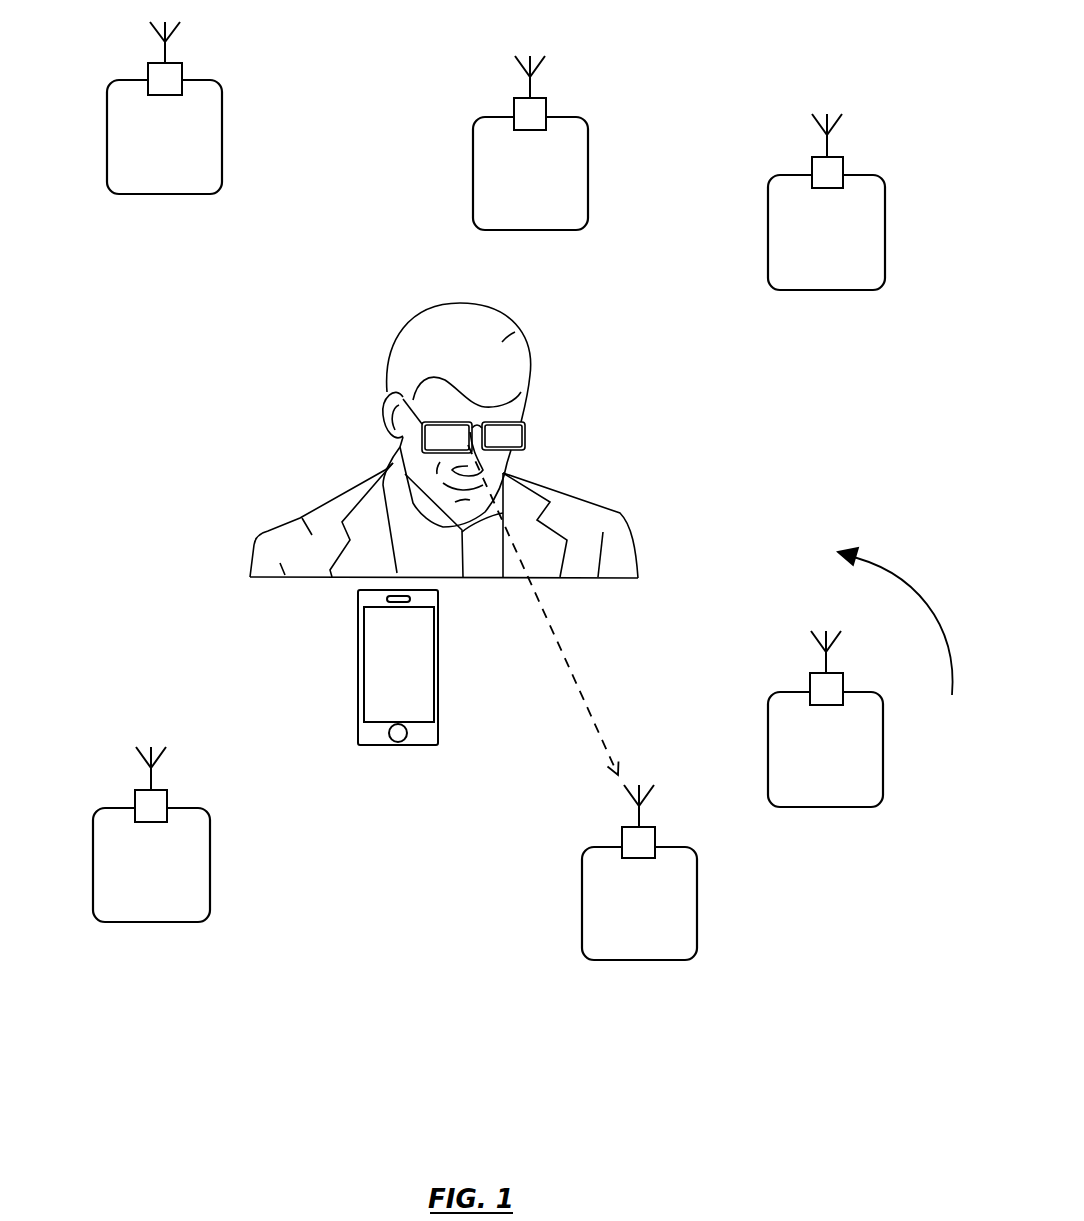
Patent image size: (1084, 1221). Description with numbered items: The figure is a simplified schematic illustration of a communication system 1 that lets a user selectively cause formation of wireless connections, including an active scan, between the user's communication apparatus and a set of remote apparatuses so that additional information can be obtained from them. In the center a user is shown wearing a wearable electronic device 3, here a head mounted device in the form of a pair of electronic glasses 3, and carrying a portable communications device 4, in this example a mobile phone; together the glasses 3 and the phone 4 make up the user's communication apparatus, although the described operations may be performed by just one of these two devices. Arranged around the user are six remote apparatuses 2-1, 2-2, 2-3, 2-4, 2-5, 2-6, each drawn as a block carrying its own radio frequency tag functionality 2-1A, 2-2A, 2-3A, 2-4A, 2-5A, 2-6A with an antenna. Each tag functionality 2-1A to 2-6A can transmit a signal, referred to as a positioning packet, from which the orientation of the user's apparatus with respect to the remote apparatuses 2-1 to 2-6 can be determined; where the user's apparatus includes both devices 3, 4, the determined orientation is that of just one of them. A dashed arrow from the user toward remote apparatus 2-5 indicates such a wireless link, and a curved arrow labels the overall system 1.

The communication system 1 is at (901, 646).
The remote apparatus 2-1 is at (164, 137).
The radio frequency tag functionality 2-1A is at (148, 73).
The remote apparatus 2-2 is at (530, 173).
The radio frequency tag functionality 2-2A is at (514, 108).
The remote apparatus 2-3 is at (826, 232).
The radio frequency tag functionality 2-3A is at (843, 162).
The remote apparatus 2-4 is at (825, 749).
The radio frequency tag functionality 2-4A is at (810, 682).
The remote apparatus 2-5 is at (639, 903).
The radio frequency tag functionality 2-5A is at (622, 836).
The remote apparatus 2-6 is at (151, 865).
The radio frequency tag functionality 2-6A is at (135, 798).
The wearable electronic device 3 is at (526, 438).
The portable communications device 4 is at (357, 706).